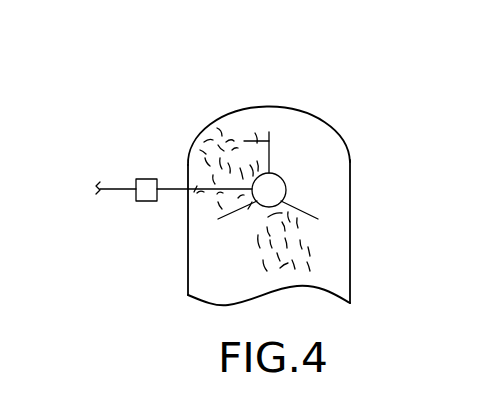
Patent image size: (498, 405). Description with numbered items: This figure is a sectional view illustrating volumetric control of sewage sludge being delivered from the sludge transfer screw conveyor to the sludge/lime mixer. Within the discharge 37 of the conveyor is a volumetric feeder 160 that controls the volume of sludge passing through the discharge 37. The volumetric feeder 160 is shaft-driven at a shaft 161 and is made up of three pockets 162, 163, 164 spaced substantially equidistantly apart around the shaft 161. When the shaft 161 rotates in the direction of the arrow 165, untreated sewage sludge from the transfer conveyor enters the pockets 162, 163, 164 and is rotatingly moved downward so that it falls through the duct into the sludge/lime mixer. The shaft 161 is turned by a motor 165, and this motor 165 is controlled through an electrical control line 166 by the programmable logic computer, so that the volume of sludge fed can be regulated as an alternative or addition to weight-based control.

The volumetric feeder 160 is at (312, 188).
The discharge opening 37 is at (348, 158).
The shaft 161 is at (281, 179).
The pocket 162 is at (293, 140).
The pocket 163 is at (197, 152).
The pocket 164 is at (302, 235).
The motor 165 is at (148, 192).
The electrical control line 166 is at (111, 189).